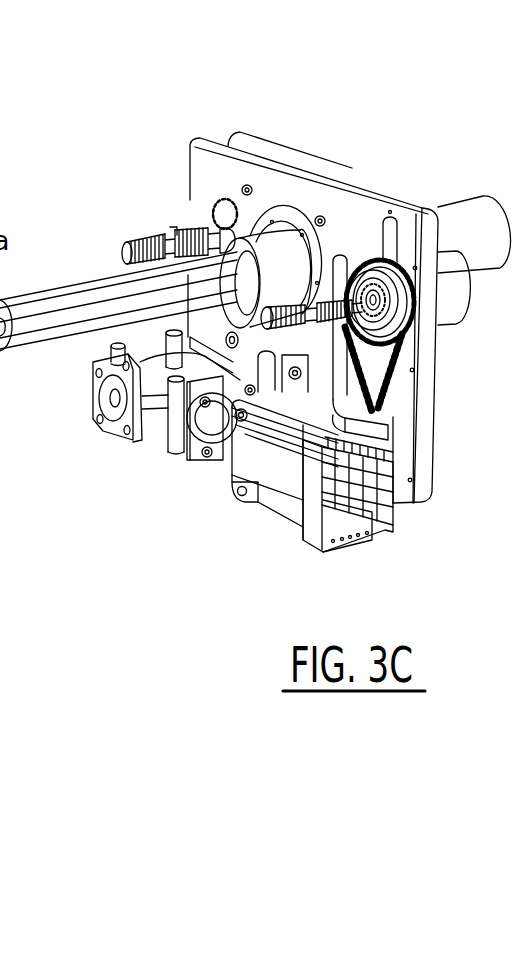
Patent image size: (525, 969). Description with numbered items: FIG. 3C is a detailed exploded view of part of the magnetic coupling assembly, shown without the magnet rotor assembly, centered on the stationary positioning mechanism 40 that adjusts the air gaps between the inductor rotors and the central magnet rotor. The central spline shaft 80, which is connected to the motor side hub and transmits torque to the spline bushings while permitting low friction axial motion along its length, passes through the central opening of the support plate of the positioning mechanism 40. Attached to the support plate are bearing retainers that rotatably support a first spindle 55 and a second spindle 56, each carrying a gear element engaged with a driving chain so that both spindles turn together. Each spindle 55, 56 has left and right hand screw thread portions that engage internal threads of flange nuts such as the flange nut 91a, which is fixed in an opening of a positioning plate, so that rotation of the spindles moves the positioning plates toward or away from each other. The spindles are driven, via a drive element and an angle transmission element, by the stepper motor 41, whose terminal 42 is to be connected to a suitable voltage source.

The positioning mechanism 40 is at (390, 97).
The first spindle 55 is at (332, 298).
The second spindle 56 is at (176, 225).
The spline shaft 80 is at (50, 301).
The flange nut 91a is at (71, 419).
The stepper motor 41 is at (265, 483).
The terminal 42 is at (350, 547).